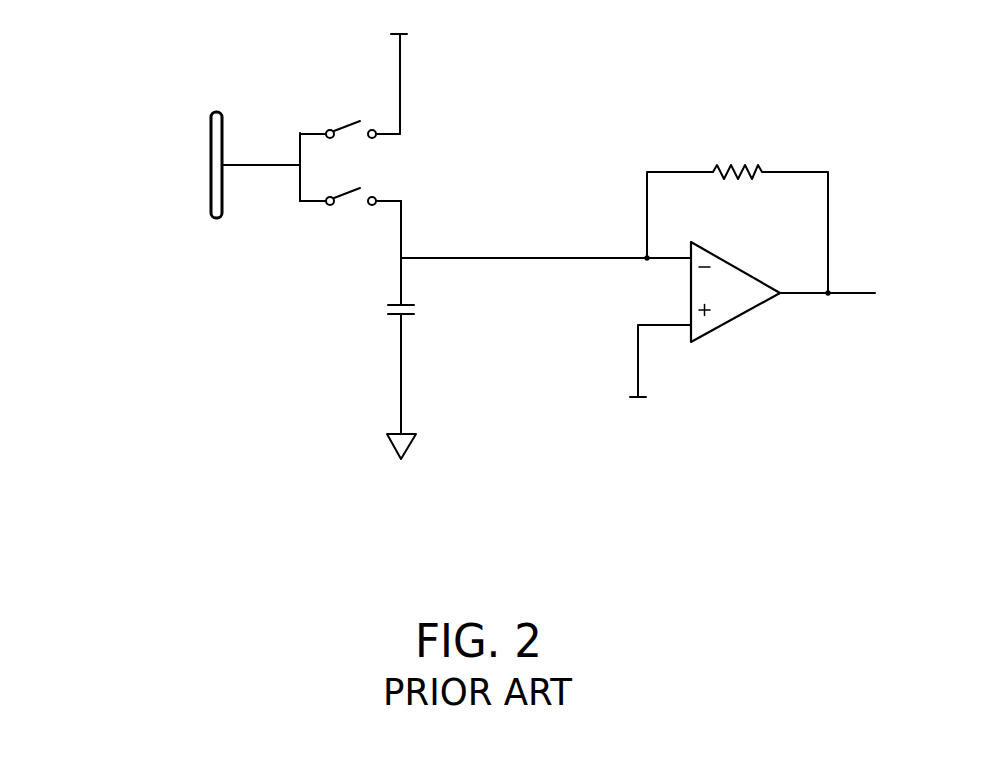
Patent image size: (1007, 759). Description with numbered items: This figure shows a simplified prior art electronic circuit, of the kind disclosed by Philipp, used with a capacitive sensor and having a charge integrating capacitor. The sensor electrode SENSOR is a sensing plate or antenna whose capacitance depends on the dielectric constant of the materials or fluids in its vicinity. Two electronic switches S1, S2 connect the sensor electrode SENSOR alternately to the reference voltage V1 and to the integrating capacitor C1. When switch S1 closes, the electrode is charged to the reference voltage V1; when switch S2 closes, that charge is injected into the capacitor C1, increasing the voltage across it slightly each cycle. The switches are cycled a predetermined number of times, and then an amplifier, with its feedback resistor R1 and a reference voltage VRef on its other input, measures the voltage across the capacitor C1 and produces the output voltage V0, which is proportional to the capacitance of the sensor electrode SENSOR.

The sensor electrode SENSOR is at (178, 157).
The switch S1 is at (350, 111).
The switch S2 is at (350, 218).
The reference voltage V1 is at (407, 68).
The charge integrating capacitor C1 is at (420, 377).
The feedback resistor R1 is at (737, 212).
The output voltage V0 is at (844, 278).
The reference voltage input VRef is at (660, 379).